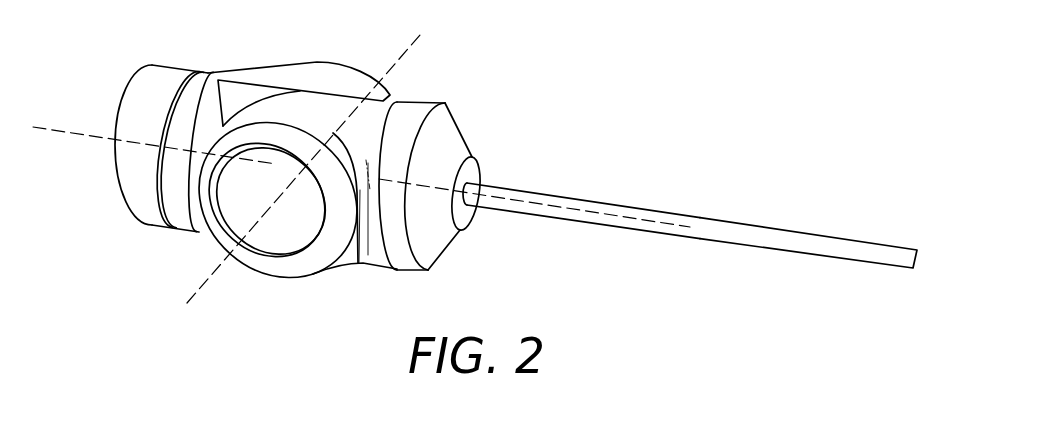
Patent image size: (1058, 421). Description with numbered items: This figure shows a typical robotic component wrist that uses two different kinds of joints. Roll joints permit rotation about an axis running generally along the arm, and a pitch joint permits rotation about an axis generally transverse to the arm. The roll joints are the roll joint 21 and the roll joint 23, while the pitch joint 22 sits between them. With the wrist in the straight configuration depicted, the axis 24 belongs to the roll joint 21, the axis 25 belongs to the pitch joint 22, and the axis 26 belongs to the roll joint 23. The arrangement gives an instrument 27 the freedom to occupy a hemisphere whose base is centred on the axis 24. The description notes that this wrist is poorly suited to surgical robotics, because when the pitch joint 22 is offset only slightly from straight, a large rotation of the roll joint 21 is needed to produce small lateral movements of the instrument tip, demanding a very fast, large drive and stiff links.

The roll joint 21 is at (180, 67).
The pitch joint 22 is at (323, 63).
The roll joint 23 is at (428, 100).
The axis 24 is at (58, 133).
The axis 25 is at (195, 293).
The axis 26 is at (535, 200).
The instrument 27 is at (828, 237).